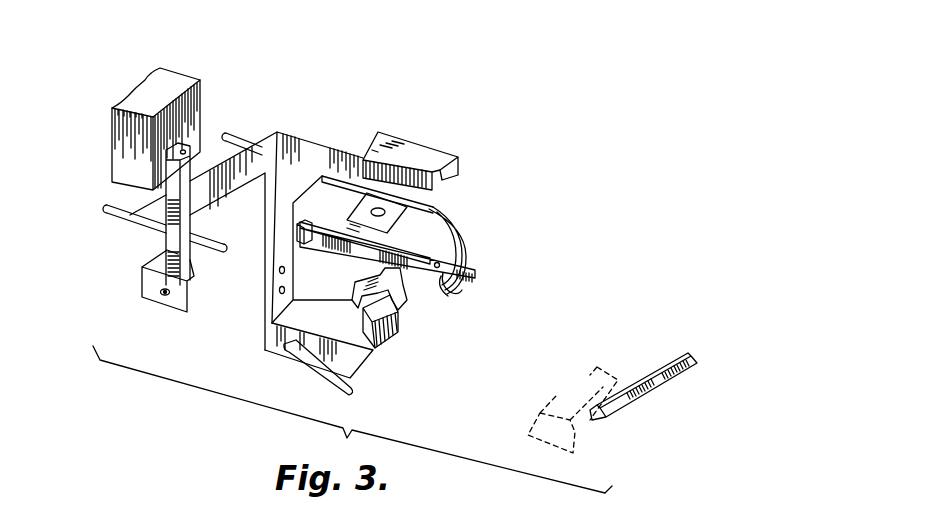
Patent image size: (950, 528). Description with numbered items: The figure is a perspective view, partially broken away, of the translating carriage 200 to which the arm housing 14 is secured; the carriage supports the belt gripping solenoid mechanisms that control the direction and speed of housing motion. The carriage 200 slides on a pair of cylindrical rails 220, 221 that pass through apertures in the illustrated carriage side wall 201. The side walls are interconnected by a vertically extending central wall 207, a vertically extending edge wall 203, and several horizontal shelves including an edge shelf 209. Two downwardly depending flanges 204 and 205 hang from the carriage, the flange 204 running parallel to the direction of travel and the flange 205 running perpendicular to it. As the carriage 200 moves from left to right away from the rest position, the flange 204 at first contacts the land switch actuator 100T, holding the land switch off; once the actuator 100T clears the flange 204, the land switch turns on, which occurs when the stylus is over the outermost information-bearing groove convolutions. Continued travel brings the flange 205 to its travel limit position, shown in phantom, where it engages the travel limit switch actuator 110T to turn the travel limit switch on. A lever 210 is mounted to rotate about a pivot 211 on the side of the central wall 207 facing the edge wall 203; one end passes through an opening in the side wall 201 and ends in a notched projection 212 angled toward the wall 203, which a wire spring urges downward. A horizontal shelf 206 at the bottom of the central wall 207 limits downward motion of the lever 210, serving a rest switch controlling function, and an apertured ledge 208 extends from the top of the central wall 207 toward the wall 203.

The housing 14 is at (190, 45).
The cylindrical rail 221 is at (247, 133).
The cylindrical rail 220 is at (130, 224).
The edge wall 203 is at (150, 291).
The carriage side wall 201 is at (308, 158).
The projection 212 is at (300, 232).
The translating carriage 200 is at (405, 126).
The edge shelf 209 is at (382, 140).
The apertured ledge 208 is at (396, 208).
The central wall 207 is at (462, 238).
The lever 210 is at (473, 270).
The pivot 211 is at (452, 290).
The horizontal shelf 206 is at (372, 285).
The flange 205 is at (380, 330).
The flange 204 is at (272, 338).
The land switch actuator 100T is at (323, 382).
The travel limit switch actuator 110T is at (655, 390).